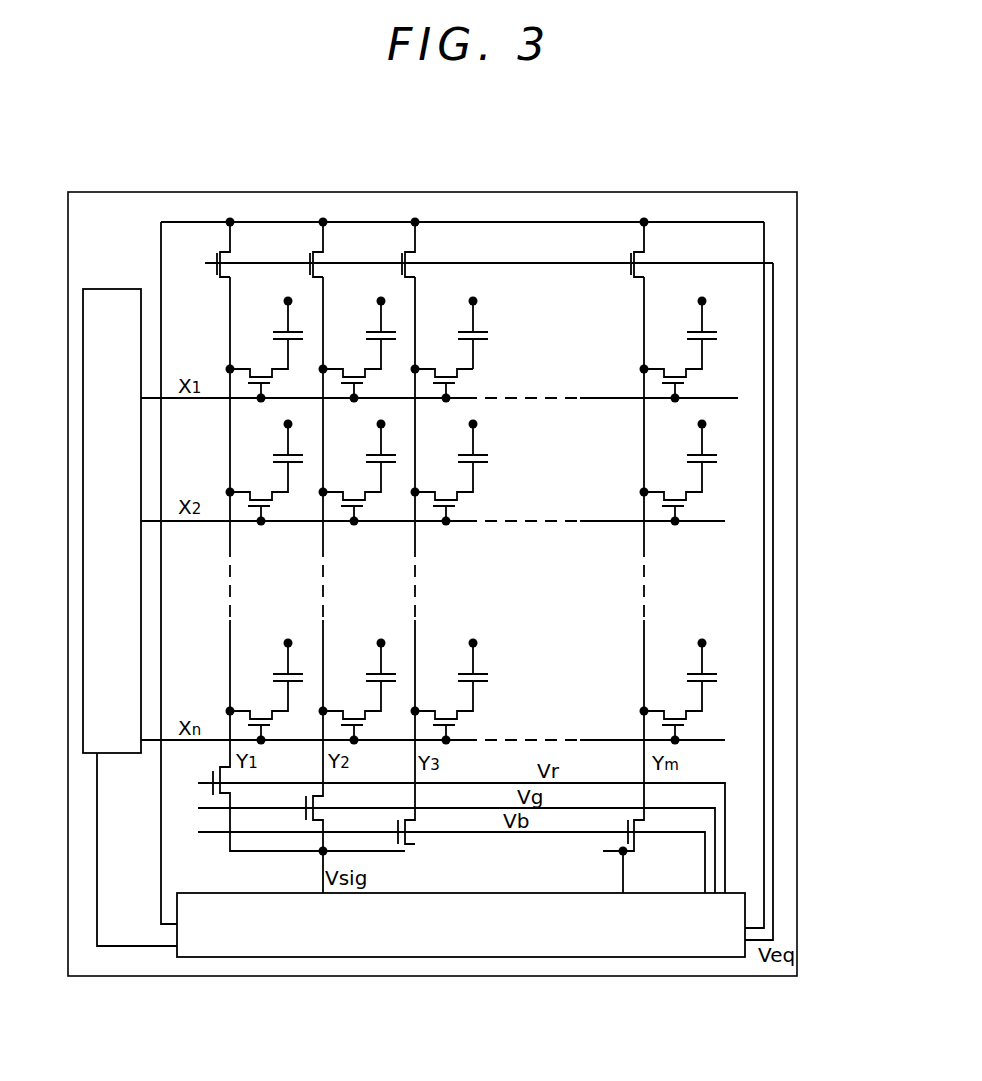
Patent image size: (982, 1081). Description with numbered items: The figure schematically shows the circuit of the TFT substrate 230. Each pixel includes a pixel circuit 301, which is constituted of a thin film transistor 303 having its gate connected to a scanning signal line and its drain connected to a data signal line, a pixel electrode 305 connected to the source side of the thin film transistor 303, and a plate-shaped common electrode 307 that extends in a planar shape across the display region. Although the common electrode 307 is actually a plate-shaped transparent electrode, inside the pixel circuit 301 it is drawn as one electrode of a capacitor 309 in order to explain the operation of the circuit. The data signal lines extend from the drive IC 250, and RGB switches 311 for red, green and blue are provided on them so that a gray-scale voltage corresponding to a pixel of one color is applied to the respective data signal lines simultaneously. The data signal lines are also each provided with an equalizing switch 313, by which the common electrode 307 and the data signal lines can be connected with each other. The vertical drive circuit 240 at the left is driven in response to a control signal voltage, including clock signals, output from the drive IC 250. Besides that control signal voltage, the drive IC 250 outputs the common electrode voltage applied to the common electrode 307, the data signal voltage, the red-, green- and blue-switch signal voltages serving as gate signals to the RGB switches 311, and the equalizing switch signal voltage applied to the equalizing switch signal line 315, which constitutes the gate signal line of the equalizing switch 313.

The TFT substrate 230 is at (275, 192).
The vertical drive circuit 240 is at (115, 302).
The drive IC 250 is at (642, 945).
The pixel circuit 301 is at (501, 315).
The thin film transistor 303 is at (465, 383).
The pixel electrode 305 is at (480, 347).
The common electrode 307 is at (478, 332).
The capacitor 309 is at (497, 338).
The RGB switch 311 is at (398, 855).
The equalizing switch 313 is at (395, 228).
The equalizing switch signal line 315 is at (775, 407).